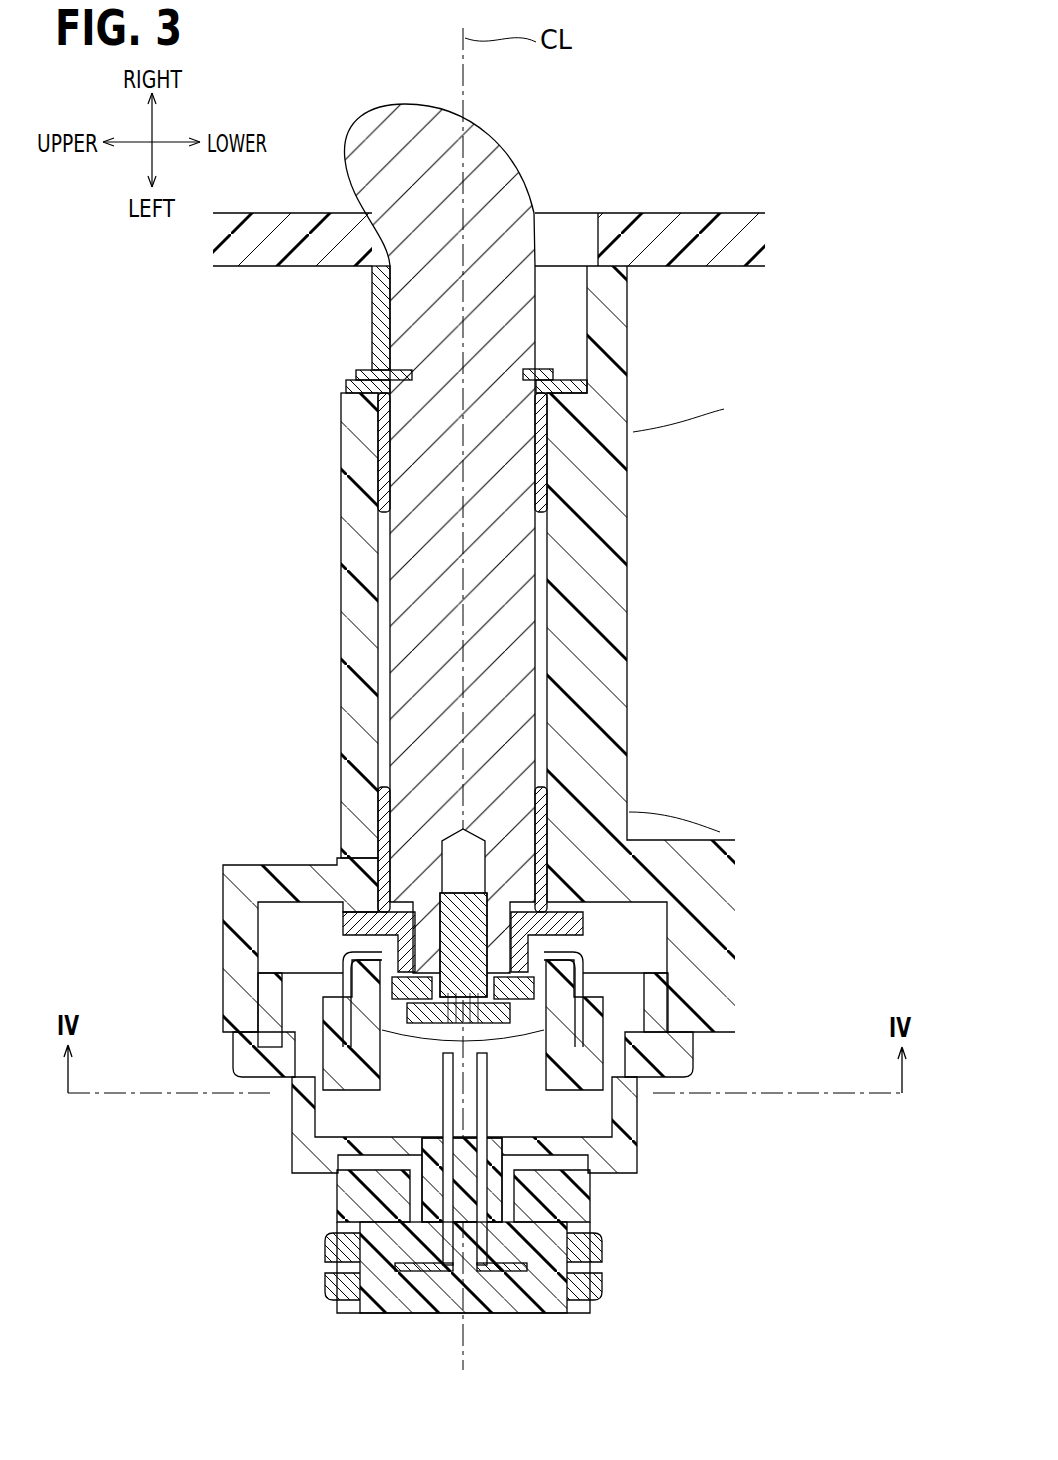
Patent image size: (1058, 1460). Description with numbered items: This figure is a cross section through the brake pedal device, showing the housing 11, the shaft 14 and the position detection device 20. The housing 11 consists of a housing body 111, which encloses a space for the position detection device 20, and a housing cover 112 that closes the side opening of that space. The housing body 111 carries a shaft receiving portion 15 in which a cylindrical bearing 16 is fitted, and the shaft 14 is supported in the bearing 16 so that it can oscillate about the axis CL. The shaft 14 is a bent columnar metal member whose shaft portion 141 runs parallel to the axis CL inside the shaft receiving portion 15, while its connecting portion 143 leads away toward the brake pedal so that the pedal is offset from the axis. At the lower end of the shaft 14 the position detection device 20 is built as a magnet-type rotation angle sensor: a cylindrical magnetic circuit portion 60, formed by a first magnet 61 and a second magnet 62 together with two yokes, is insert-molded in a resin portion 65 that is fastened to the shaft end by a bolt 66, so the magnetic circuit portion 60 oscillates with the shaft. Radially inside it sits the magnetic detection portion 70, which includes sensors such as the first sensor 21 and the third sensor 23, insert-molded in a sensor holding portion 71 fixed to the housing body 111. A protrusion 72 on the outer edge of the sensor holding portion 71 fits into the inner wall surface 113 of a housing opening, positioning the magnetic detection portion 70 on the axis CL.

The housing 11 is at (555, 608).
The housing body 111 is at (710, 963).
The housing cover 112 is at (690, 232).
The inner wall surface 113 is at (680, 1060).
The shaft 14 is at (571, 513).
The shaft portion 141 is at (520, 622).
The connecting portion 143 is at (393, 122).
The shaft receiving portion 15 is at (357, 600).
The cylindrical bearing 16 is at (383, 466).
The position detection device 20 is at (147, 975).
The first sensor 21 is at (342, 1168).
The third sensor 23 is at (587, 1177).
The magnetic circuit portion 60 is at (257, 1027).
The first magnet 61 is at (340, 1123).
The second magnet 62 is at (570, 1100).
The resin portion 65 is at (347, 985).
The bolt 66 is at (477, 938).
The magnetic detection portion 70 is at (325, 1069).
The sensor holding portion 71 is at (370, 1200).
The protrusion 72 is at (667, 985).